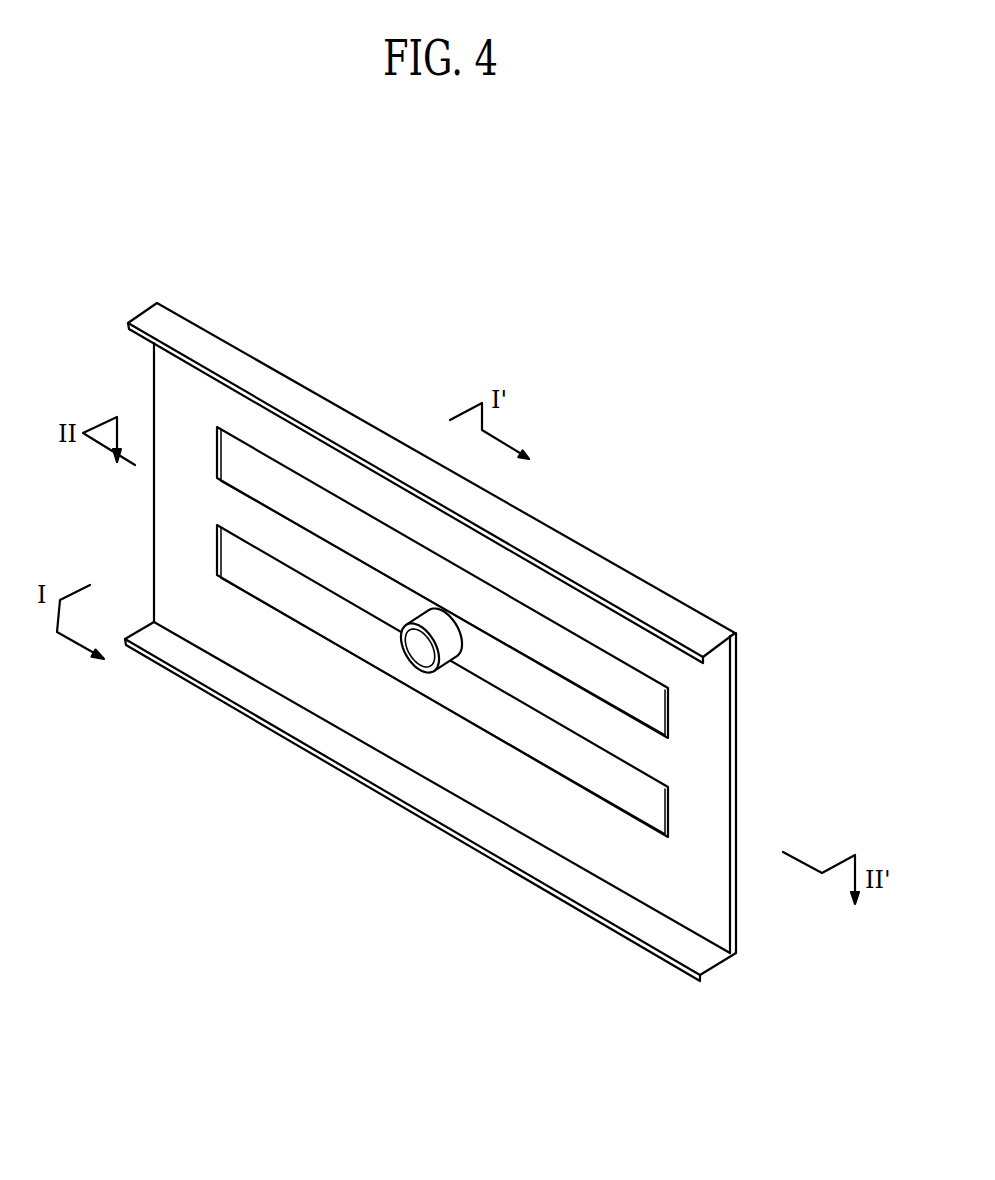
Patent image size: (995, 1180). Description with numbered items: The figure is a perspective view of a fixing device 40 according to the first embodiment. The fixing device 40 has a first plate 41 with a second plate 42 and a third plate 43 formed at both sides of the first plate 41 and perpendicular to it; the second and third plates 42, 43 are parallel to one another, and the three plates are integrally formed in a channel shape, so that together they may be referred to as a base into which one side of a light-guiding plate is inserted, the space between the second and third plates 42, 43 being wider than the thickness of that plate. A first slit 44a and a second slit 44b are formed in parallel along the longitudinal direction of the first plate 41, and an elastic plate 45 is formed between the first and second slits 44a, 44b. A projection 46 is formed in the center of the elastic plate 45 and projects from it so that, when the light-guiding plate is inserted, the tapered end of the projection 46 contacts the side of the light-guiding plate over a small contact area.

The fixing device 40 is at (297, 368).
The first plate 41 is at (715, 762).
The second plate 42 is at (663, 607).
The third plate 43 is at (640, 922).
The first slit 44a is at (653, 683).
The second slit 44b is at (527, 732).
The elastic plate 45 is at (522, 662).
The projection 46 is at (412, 638).